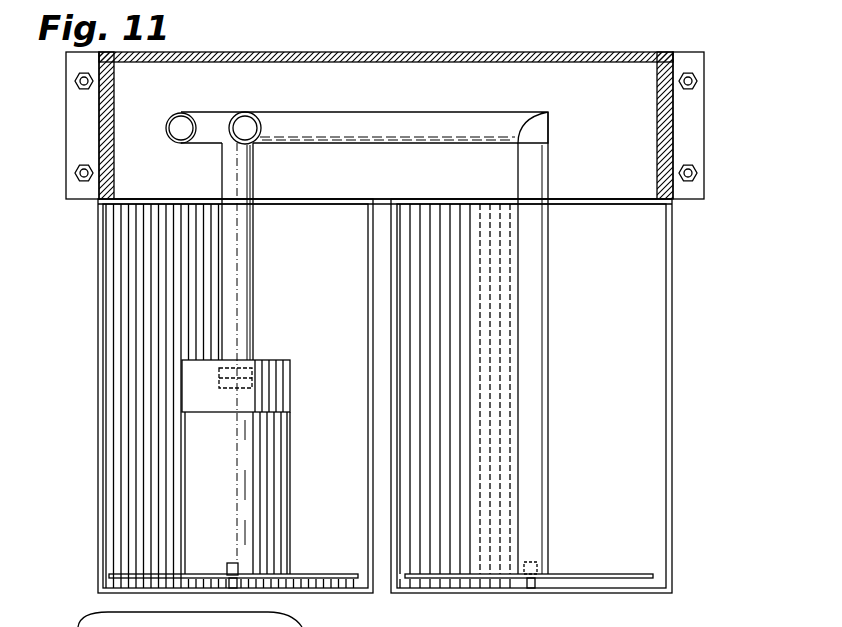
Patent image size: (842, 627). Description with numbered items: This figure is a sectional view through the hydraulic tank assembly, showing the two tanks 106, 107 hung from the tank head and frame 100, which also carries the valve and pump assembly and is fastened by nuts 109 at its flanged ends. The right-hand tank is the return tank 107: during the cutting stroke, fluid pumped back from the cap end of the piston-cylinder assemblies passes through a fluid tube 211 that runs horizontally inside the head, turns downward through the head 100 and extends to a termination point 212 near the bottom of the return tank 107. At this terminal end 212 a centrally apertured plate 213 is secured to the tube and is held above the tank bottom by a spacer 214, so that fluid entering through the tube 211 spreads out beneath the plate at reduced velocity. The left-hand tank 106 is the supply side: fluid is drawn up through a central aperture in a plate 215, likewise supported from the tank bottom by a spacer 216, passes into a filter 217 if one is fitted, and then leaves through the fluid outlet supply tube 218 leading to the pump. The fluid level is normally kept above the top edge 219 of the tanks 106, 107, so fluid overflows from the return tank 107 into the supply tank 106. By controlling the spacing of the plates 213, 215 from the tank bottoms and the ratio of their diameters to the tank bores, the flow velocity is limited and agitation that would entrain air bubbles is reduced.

The tank head and frame 100 is at (663, 123).
The fastening nut 109 is at (690, 80).
The tank 106 is at (115, 363).
The return tank 107 is at (635, 382).
The fluid tube 211 is at (420, 126).
The termination point 212 is at (543, 572).
The plate 213 is at (592, 575).
The spacer 214 is at (531, 577).
The plate 215 is at (331, 578).
The spacer 216 is at (228, 578).
The filter 217 is at (217, 506).
The fluid outlet supply tube 218 is at (237, 297).
The top edge 219 is at (601, 197).